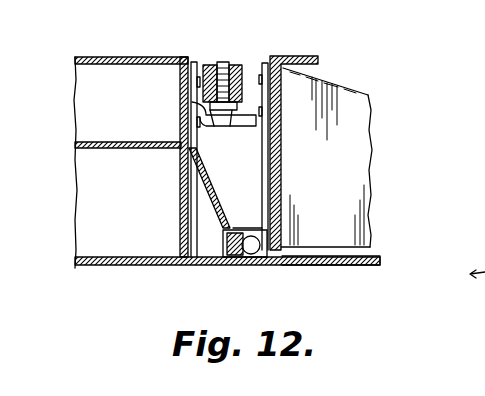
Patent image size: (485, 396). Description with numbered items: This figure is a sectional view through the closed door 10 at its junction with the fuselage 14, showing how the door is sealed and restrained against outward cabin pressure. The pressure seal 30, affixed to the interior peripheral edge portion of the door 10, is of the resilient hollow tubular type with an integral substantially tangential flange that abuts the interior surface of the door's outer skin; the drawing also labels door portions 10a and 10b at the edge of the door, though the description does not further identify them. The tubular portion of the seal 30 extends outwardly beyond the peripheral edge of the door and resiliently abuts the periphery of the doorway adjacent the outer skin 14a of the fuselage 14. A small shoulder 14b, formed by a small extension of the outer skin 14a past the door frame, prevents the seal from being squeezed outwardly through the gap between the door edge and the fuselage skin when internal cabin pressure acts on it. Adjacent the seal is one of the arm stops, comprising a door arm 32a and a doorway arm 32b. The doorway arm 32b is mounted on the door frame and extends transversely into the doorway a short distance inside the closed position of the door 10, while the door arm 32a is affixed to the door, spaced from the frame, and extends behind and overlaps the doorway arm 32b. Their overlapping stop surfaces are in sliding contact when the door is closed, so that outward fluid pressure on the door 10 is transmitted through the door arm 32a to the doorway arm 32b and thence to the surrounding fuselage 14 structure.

The door 10 is at (382, 166).
The housing bottom wall 10a is at (345, 266).
The housing side post 10b is at (257, 268).
The fuselage 14 is at (116, 271).
The outer skin of the fuselage 14a is at (196, 268).
The shoulder 14b is at (255, 266).
The pressure seal 30 is at (250, 229).
The door arm 32a is at (221, 128).
The doorway arm 32b is at (247, 68).